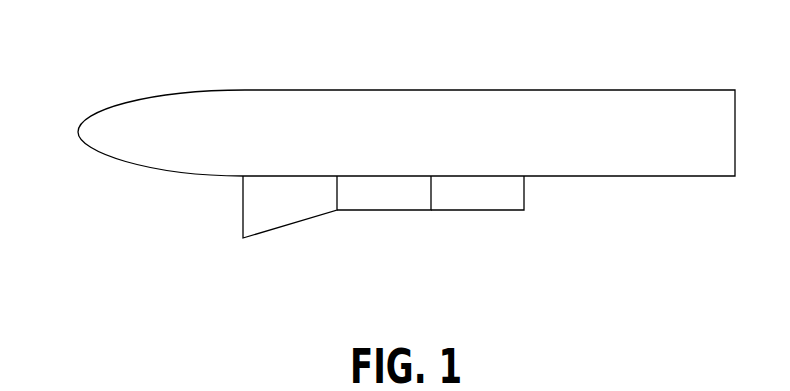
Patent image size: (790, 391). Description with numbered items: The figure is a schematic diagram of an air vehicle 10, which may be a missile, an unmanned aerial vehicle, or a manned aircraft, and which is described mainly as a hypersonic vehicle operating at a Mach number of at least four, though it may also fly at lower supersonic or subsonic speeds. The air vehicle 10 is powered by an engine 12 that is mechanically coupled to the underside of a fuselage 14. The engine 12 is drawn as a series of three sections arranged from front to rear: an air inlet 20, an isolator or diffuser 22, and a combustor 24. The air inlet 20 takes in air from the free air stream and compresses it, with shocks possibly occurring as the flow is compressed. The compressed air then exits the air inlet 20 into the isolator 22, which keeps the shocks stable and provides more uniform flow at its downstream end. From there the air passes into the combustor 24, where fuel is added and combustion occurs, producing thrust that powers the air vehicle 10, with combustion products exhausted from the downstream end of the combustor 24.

The air vehicle 10 is at (384, 182).
The engine 12 is at (343, 270).
The fuselage 14 is at (133, 143).
The air inlet 20 is at (292, 198).
The isolator 22 is at (390, 198).
The combustor 24 is at (482, 198).